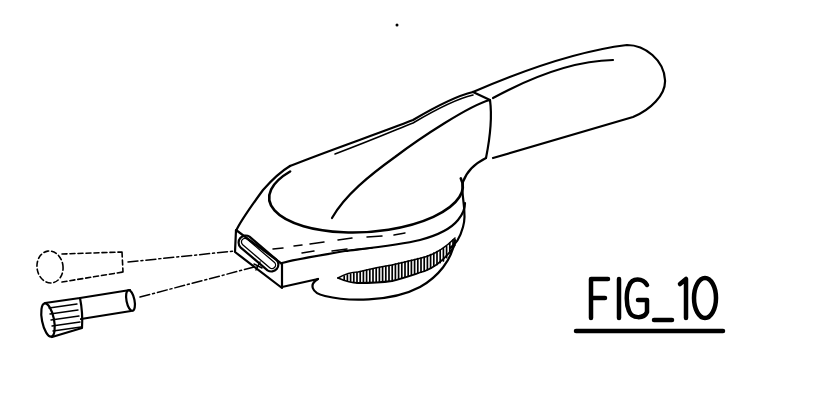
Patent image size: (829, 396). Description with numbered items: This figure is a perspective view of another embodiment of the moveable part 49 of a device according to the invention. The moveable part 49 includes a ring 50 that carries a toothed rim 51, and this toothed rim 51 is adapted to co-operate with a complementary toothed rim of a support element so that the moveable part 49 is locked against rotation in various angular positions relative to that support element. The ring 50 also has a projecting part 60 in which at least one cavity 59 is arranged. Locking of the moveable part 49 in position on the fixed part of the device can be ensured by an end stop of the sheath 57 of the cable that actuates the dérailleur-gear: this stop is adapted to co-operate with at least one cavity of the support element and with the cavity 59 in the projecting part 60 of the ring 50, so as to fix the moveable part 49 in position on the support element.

The moveable part 49 is at (467, 83).
The ring 50 is at (460, 276).
The toothed rim 51 is at (405, 281).
The sheath 57 is at (107, 303).
The cavity 59 is at (260, 267).
The projecting part 60 is at (321, 270).